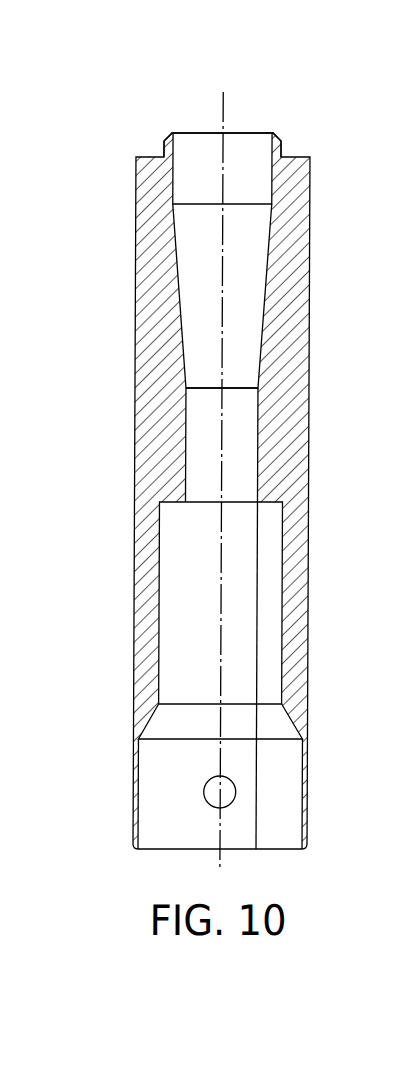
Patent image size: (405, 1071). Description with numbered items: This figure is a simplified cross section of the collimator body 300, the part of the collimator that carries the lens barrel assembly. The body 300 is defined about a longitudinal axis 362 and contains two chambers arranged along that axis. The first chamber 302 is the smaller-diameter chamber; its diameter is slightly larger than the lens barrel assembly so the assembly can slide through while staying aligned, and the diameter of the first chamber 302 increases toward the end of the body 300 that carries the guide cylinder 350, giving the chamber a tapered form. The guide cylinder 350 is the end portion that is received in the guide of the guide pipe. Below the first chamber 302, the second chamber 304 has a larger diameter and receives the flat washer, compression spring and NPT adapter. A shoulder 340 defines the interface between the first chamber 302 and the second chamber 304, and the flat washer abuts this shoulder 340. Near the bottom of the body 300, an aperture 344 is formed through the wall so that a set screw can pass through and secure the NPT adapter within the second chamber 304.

The collimator body 300 is at (97, 158).
The first chamber 302 is at (253, 457).
The second chamber 304 is at (253, 583).
The shoulder 340 is at (180, 503).
The aperture 344 is at (214, 794).
The guide cylinder 350 is at (281, 150).
The longitudinal axis 362 is at (227, 107).